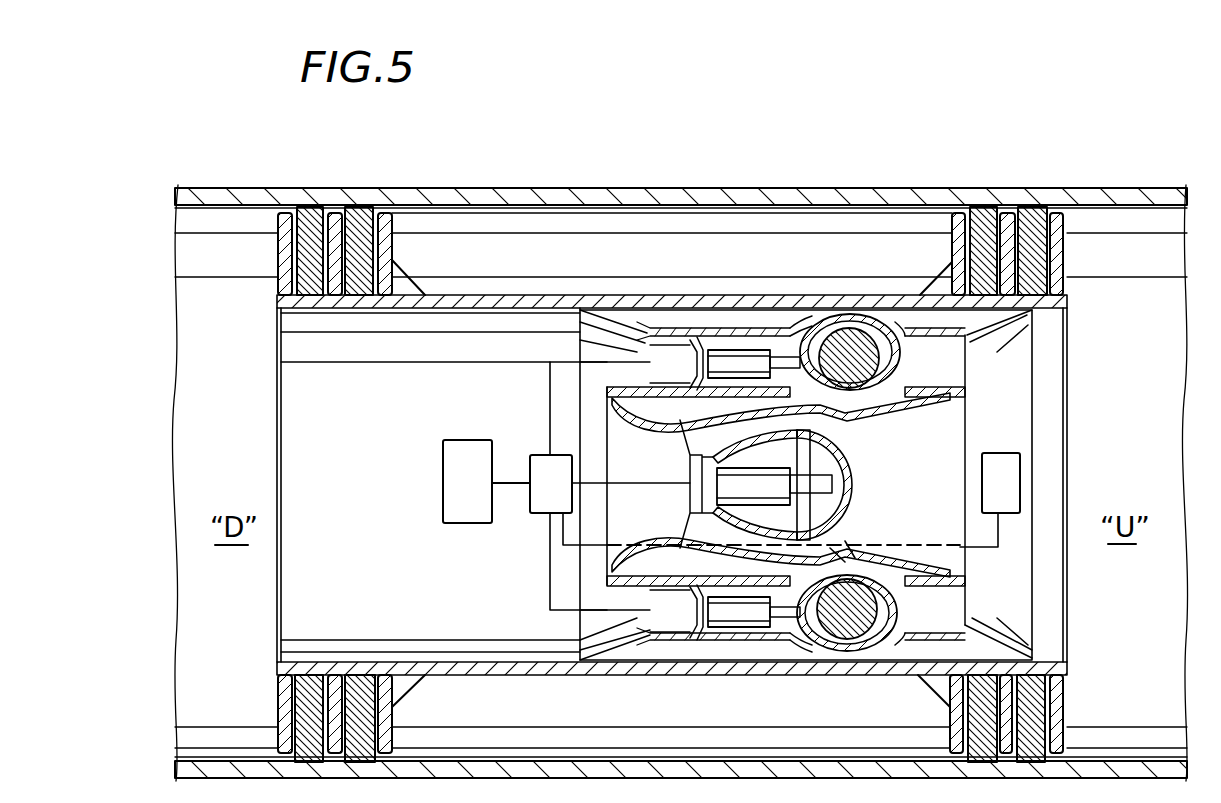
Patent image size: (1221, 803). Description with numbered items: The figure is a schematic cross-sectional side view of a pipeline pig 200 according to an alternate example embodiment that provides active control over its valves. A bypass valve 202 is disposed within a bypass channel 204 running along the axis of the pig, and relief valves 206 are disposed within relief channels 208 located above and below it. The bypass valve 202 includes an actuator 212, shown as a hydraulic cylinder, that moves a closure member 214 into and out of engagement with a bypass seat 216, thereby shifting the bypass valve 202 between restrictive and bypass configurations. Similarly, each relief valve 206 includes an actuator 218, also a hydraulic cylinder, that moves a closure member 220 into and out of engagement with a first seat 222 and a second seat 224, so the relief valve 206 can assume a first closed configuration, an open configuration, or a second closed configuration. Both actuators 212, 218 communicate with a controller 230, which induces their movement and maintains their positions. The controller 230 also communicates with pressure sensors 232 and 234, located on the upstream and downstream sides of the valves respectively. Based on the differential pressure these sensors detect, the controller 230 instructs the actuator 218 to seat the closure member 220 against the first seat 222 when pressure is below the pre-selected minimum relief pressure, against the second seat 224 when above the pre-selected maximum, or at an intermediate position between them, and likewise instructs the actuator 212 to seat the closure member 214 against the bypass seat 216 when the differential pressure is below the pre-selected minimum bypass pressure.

The pipeline pig 200 is at (957, 160).
The bypass valve 202 is at (1000, 440).
The bypass channel 204 is at (940, 557).
The relief valve 206 is at (908, 360).
The relief channel 208 is at (1012, 334).
The actuator 212 is at (752, 490).
The closure member 214 is at (840, 520).
The bypass seat 216 is at (840, 545).
The actuator 218 is at (727, 352).
The closure member 220 is at (847, 352).
The first seat 222 is at (898, 334).
The second seat 224 is at (800, 322).
The controller 230 is at (540, 510).
The pressure sensor 232 is at (1012, 495).
The pressure sensor 234 is at (462, 452).